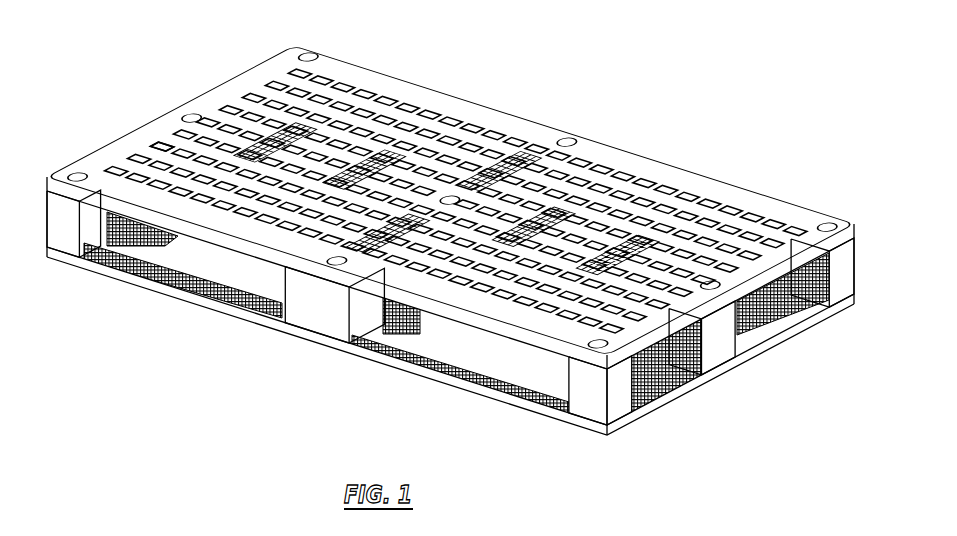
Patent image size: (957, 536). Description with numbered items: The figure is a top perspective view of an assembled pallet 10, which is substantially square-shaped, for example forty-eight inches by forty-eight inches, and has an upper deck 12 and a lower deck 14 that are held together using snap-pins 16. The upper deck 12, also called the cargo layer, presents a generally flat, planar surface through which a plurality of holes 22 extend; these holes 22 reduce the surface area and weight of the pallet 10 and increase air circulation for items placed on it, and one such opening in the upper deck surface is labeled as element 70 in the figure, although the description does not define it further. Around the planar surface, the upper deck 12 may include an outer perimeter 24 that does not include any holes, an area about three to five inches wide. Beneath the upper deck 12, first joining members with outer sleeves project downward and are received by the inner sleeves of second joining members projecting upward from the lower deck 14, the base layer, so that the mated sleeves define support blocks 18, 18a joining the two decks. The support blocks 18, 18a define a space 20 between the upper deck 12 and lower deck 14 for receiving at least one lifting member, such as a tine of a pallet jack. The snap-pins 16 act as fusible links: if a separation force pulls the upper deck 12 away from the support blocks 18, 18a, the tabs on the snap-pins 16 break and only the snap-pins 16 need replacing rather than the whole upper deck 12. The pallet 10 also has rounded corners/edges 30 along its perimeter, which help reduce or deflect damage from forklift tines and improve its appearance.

The pallet 10 is at (676, 84).
The upper deck 12 is at (678, 168).
The lower deck 14 is at (670, 384).
The snap-pins 16 is at (302, 53).
The support blocks 18 is at (63, 230).
The support block 18a is at (357, 312).
The space 20 is at (758, 368).
The holes 22 is at (483, 133).
The outer perimeter 24 is at (446, 100).
The rounded corners/edges 30 is at (856, 238).
The slot 70 is at (156, 143).